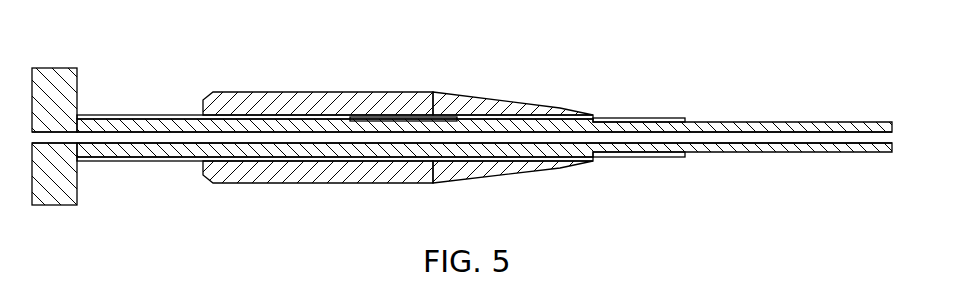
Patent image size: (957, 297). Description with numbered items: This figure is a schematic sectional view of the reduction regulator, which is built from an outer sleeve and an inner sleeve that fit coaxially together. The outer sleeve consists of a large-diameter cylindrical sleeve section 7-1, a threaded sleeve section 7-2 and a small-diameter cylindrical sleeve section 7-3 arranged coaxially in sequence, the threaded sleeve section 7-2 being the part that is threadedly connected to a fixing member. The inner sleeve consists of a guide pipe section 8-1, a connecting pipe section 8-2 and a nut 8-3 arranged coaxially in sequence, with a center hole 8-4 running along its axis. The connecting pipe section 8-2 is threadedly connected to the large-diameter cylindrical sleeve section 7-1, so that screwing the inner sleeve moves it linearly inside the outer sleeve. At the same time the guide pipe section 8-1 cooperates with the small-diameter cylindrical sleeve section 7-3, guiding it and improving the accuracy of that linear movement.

The nut 8-3 is at (57, 85).
The connecting pipe section 8-2 is at (163, 122).
The large-diameter cylindrical sleeve section 7-1 is at (385, 102).
The threaded sleeve section 7-2 is at (517, 104).
The small-diameter cylindrical sleeve section 7-3 is at (632, 120).
The guide pipe section 8-1 is at (727, 127).
The center hole 8-4 is at (692, 136).